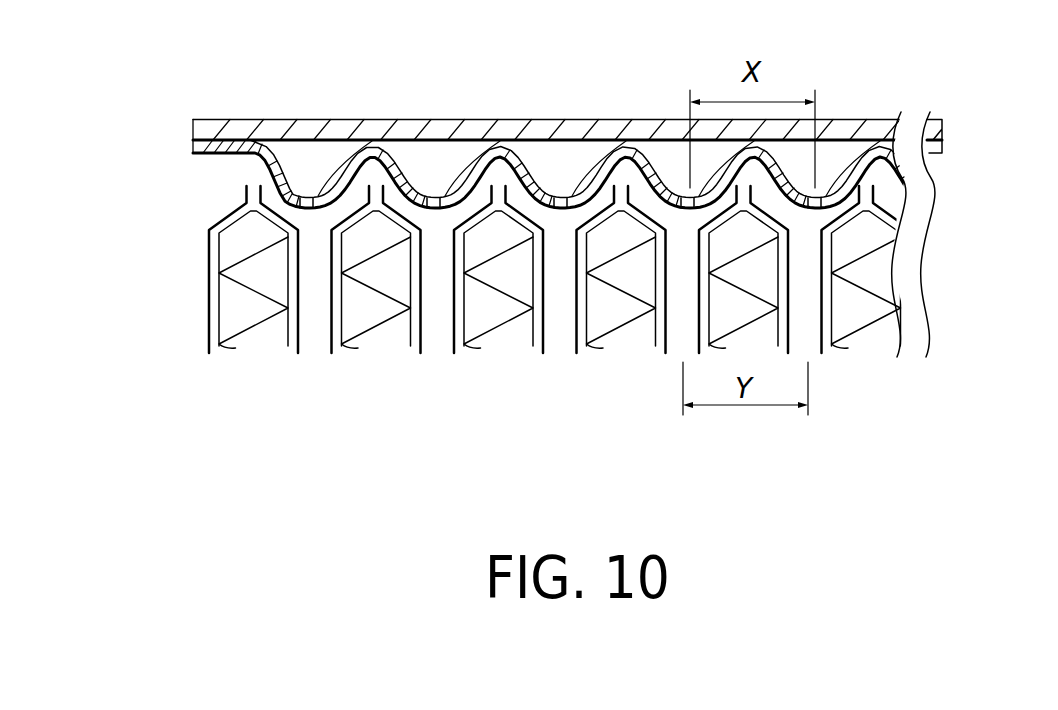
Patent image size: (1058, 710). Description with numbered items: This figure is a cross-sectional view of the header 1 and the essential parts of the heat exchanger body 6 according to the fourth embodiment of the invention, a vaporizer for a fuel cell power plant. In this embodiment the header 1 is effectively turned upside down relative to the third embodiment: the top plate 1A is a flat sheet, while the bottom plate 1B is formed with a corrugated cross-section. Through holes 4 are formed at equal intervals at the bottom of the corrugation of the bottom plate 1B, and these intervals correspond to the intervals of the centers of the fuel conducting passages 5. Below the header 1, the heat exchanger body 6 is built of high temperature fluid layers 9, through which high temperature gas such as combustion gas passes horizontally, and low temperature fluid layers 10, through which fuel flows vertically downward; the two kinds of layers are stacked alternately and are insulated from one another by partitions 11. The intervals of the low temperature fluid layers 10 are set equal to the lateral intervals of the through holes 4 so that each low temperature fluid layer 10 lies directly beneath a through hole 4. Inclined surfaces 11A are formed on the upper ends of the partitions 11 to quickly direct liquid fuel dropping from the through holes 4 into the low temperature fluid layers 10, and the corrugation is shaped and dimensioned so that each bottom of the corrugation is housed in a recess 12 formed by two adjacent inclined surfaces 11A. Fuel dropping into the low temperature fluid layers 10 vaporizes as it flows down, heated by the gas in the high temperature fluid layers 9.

The header 1 is at (641, 106).
The top plate 1A is at (212, 126).
The lower surface of plate 1B is at (198, 156).
The through holes 4 is at (566, 202).
The fuel conducting passages 5 is at (553, 158).
The heat exchanger body 6 is at (504, 257).
The high temperature fluid layers 9 is at (262, 340).
The low temperature fluid layers 10 is at (430, 335).
The partitions 11 is at (327, 320).
The inclined surfaces 11A is at (465, 222).
The recess 12 is at (300, 205).